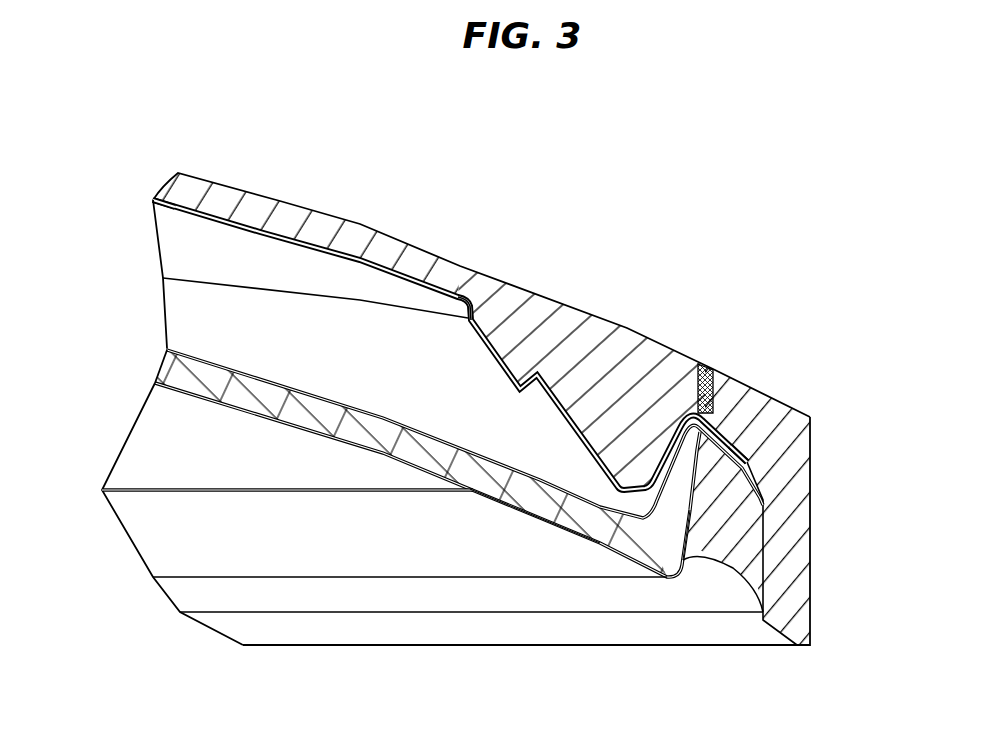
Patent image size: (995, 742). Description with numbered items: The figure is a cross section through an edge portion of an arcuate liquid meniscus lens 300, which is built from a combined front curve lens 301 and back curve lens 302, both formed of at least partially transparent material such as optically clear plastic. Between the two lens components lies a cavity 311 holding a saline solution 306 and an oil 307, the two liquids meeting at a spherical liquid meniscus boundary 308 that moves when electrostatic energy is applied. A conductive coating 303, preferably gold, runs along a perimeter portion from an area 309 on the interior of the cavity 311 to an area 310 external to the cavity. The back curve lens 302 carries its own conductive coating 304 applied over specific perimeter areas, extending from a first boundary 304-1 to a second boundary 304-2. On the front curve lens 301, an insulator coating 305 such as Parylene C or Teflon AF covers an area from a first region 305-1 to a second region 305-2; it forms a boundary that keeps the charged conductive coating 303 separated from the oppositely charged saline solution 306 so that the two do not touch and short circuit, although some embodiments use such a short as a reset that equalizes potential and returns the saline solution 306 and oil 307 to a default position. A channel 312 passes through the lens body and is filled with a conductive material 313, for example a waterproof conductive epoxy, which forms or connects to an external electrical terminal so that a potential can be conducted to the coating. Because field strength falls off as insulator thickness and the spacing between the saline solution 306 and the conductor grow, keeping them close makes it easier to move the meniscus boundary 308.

The arcuate liquid meniscus lens 300 is at (470, 382).
The front curve lens 301 is at (481, 270).
The back curve lens 302 is at (413, 457).
The conductive coating 303 is at (581, 378).
The conductive coating 304 is at (432, 543).
The first boundary 304-1 is at (287, 601).
The second boundary 304-2 is at (538, 587).
The insulator coating 305 is at (450, 344).
The first region 305-1 is at (125, 159).
The second region 305-2 is at (765, 399).
The saline solution 306 is at (128, 313).
The oil 307 is at (124, 274).
The spherical liquid meniscus boundary 308 is at (521, 393).
The area on the interior of the cavity 309 is at (532, 287).
The area external to the cavity 310 is at (554, 503).
The cavity 311 is at (301, 528).
The channel 312 is at (713, 548).
The conductive material 313 is at (717, 335).